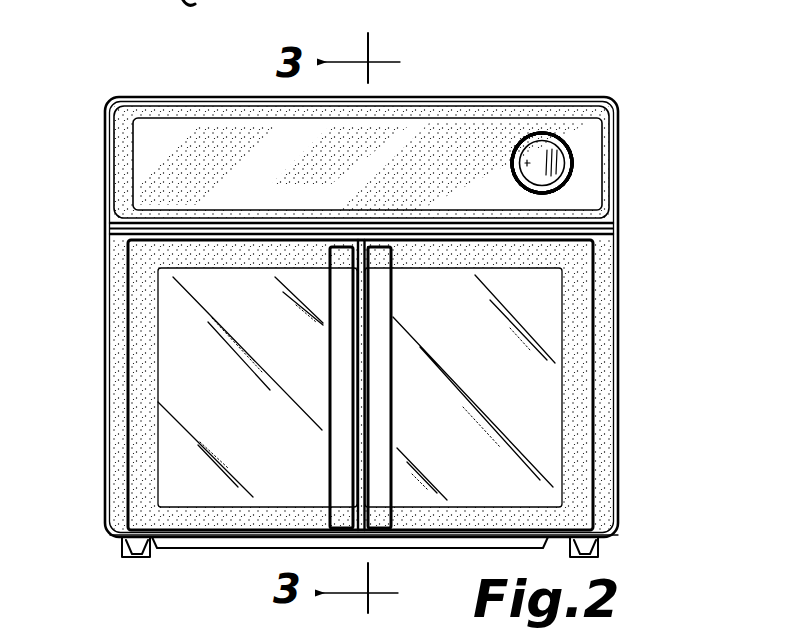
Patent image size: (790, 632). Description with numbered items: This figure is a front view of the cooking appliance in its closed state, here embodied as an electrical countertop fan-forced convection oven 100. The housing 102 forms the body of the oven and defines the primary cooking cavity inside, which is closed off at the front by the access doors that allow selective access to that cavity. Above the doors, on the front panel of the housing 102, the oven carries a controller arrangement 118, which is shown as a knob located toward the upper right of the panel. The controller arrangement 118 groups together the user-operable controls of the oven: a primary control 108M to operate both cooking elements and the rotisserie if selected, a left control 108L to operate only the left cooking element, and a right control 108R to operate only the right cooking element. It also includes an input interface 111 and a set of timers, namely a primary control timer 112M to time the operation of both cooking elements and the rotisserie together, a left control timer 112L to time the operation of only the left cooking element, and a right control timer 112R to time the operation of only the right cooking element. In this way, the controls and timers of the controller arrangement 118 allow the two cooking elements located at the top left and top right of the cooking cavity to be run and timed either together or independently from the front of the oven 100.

The convection oven 100 is at (381, 282).
The housing 102 is at (618, 297).
The controller arrangement 118 is at (542, 133).
The primary control 108M is at (586, 100).
The left control 108L is at (616, 100).
The right control 108R is at (559, 119).
The input interface 111 is at (588, 119).
The primary control timer 112M is at (616, 119).
The left control timer 112L is at (600, 138).
The right control timer 112R is at (633, 138).